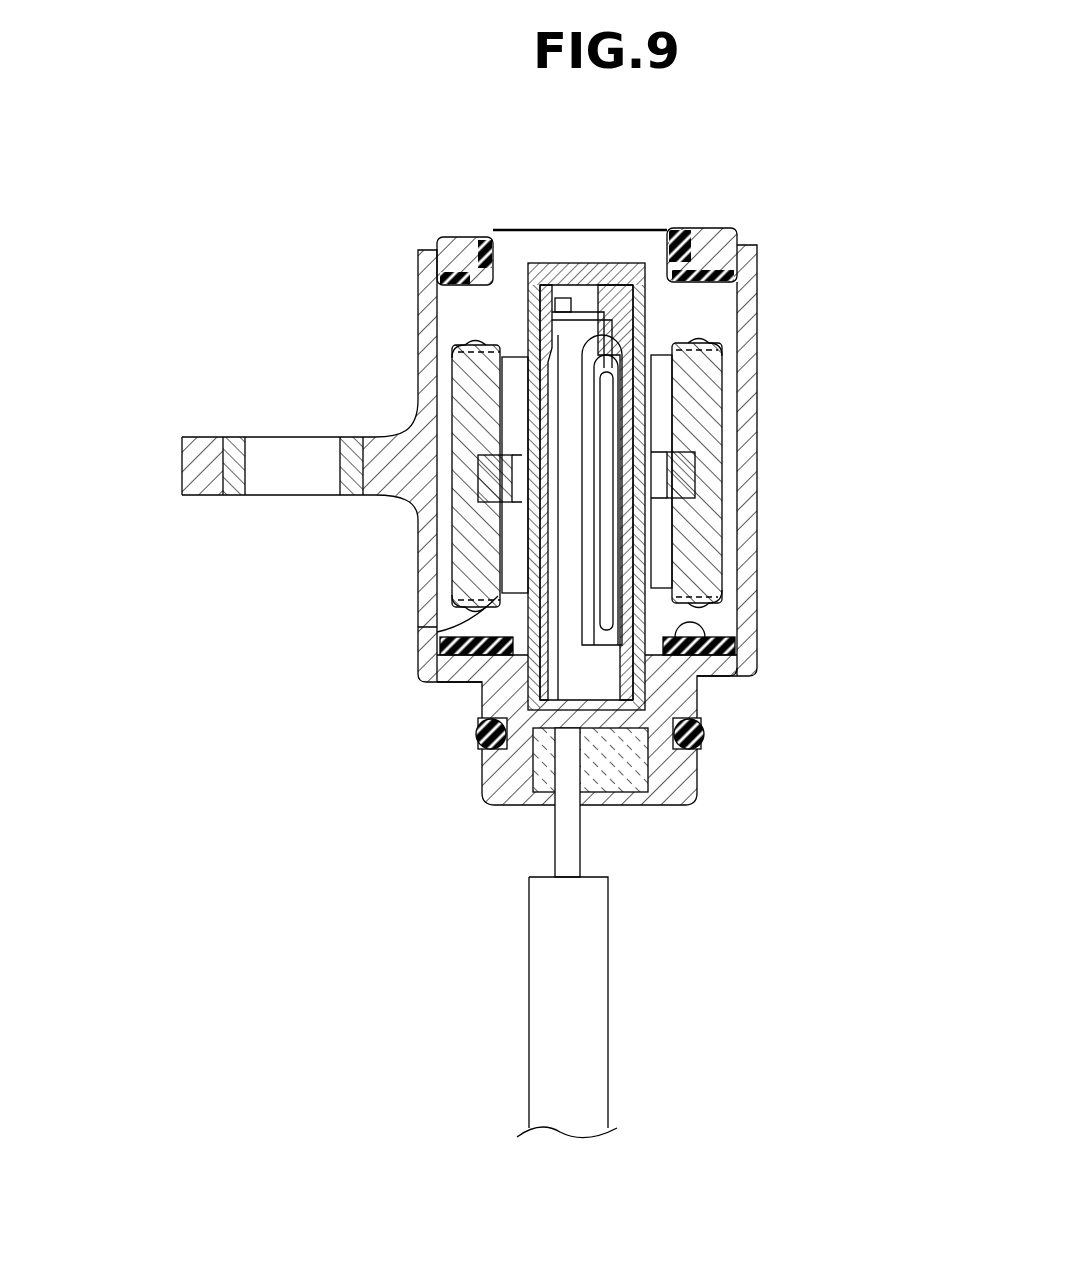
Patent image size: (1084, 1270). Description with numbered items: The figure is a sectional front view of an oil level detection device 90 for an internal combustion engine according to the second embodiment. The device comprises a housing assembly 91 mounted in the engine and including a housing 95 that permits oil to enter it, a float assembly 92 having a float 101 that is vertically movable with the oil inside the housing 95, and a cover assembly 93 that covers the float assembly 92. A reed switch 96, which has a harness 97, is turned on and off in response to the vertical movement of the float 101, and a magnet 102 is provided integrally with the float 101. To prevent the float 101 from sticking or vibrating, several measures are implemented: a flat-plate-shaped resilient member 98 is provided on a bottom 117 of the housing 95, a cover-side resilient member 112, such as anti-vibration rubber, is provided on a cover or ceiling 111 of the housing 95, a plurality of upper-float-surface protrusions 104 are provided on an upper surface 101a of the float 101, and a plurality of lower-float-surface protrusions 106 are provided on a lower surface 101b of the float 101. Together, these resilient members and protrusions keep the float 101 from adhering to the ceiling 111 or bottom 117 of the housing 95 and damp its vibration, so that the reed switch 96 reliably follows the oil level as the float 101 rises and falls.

The oil level detection device 90 is at (212, 147).
The housing assembly 91 is at (778, 322).
The float assembly 92 is at (727, 415).
The cover assembly 93 is at (735, 207).
The housing 95 is at (765, 450).
The reed switch 96 is at (632, 535).
The harness 97 is at (640, 992).
The flat-plate-shaped resilient member 98 is at (470, 668).
The float 101 is at (715, 518).
The upper surface of the float 101a is at (519, 340).
The lower surface of the float 101b is at (447, 683).
The magnet 102 is at (453, 420).
The upper-float-surface protrusions 104 is at (488, 345).
The lower-float-surface protrusions 106 is at (500, 612).
The cover or ceiling of the housing 111 is at (433, 252).
The cover-side resilient member 112 is at (690, 230).
The bottom of the housing 117 is at (735, 655).